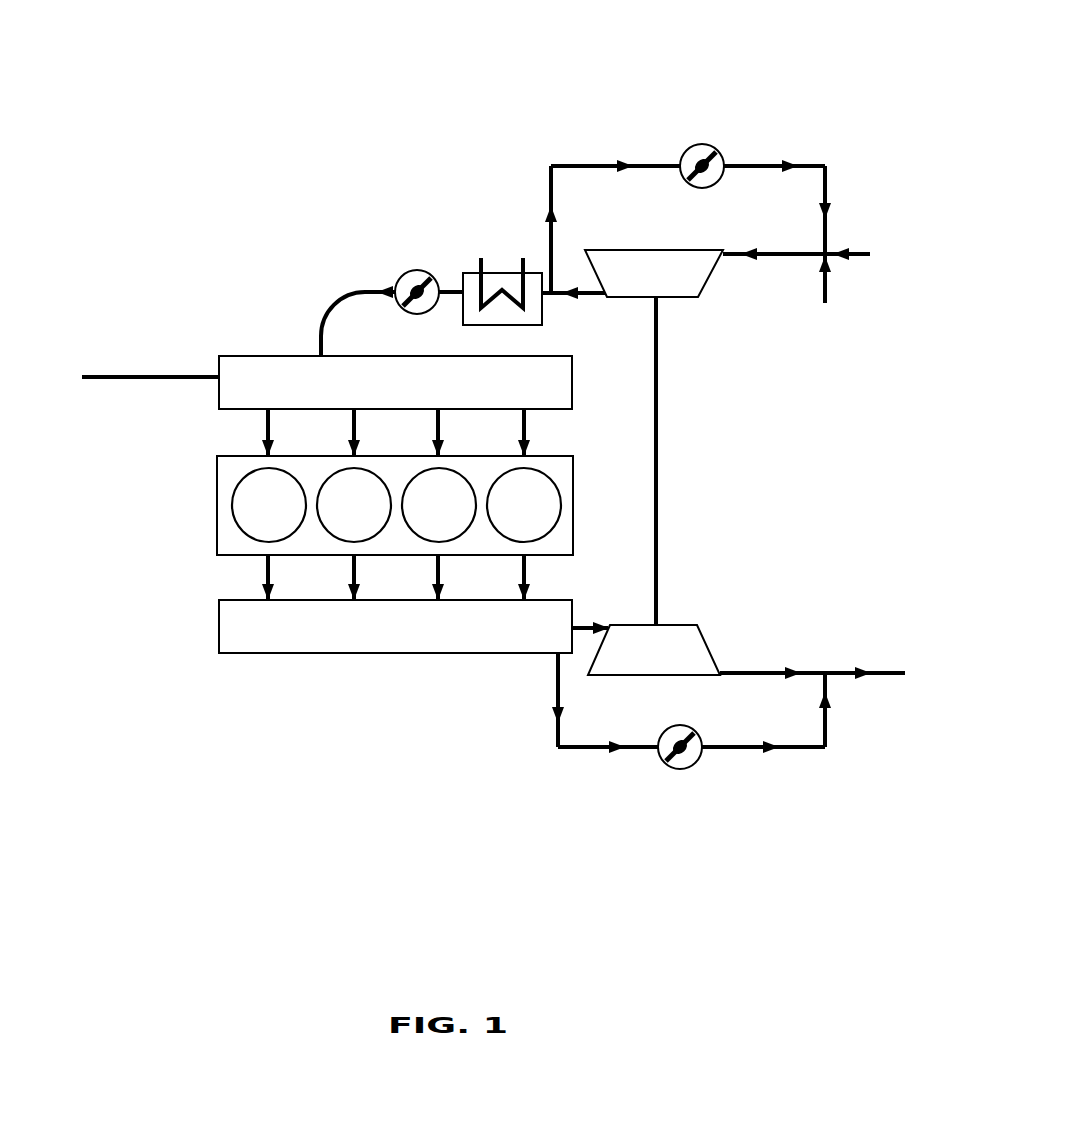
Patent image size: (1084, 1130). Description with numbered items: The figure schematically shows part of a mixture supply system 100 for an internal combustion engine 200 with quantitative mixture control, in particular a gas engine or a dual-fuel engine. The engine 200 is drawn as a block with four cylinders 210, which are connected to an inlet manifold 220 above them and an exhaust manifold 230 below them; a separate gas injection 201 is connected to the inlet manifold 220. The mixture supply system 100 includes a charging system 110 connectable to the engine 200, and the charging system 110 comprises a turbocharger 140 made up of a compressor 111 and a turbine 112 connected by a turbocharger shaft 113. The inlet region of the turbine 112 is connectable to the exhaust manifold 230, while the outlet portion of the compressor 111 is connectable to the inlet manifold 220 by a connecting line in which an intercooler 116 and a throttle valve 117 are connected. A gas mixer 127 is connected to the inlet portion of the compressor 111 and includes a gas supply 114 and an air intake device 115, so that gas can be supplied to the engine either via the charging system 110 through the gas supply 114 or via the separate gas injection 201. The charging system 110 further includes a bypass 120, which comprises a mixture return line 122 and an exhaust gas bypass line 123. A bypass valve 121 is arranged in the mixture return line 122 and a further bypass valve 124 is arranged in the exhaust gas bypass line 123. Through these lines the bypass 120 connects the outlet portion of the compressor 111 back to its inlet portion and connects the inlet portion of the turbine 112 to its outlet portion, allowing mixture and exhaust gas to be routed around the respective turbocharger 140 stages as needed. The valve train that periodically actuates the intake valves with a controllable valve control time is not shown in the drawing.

The mixture supply system 100 is at (422, 130).
The charging system 110 is at (727, 502).
The compressor 111 is at (717, 280).
The turbine 112 is at (675, 620).
The turbocharger shaft 113 is at (660, 490).
The gas supply 114 is at (835, 293).
The air intake device 115 is at (852, 245).
The intercooler 116 is at (508, 260).
The throttle valve 117 is at (400, 267).
The bypass 120 is at (813, 160).
The bypass valve 121 is at (700, 138).
The mixture return line 122 is at (752, 150).
The exhaust gas bypass line 123 is at (787, 753).
The bypass valve 124 is at (697, 775).
The gas mixer 127 is at (835, 265).
The turbocharger 140 is at (692, 542).
The internal combustion engine 200 is at (148, 213).
The gas injection 201 is at (120, 360).
The cylinder 210 is at (498, 475).
The inlet manifold 220 is at (263, 347).
The exhaust manifold 230 is at (217, 630).